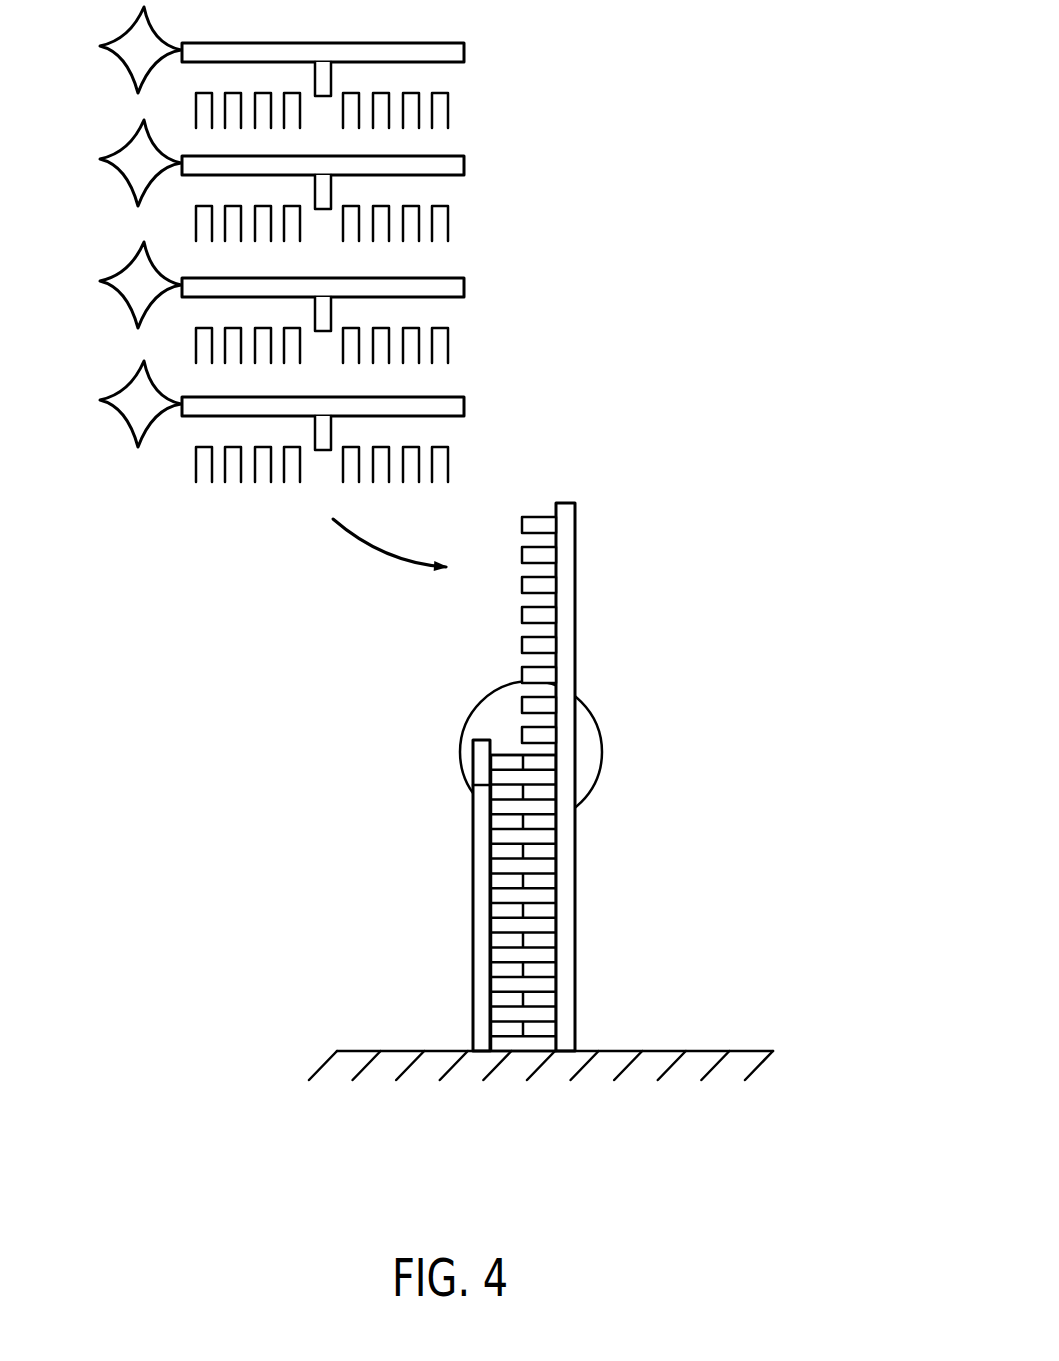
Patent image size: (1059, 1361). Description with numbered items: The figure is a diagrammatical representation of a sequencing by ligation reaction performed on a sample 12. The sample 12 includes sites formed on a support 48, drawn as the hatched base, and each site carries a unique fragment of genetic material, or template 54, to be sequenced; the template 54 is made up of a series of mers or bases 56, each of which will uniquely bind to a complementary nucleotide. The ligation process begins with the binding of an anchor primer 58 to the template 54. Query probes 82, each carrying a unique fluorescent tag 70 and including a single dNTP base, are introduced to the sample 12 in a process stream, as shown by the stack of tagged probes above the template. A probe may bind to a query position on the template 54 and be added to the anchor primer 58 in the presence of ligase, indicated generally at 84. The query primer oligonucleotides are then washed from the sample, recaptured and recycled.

The sample 12 is at (499, 840).
The support 48 is at (541, 1118).
The template 54 is at (567, 845).
The bases 56 is at (550, 971).
The anchor primer 58 is at (482, 925).
The fluorescent tag 70 is at (125, 57).
The query probes 82 is at (507, 100).
The ligation in the presence of ligase 84 is at (593, 720).